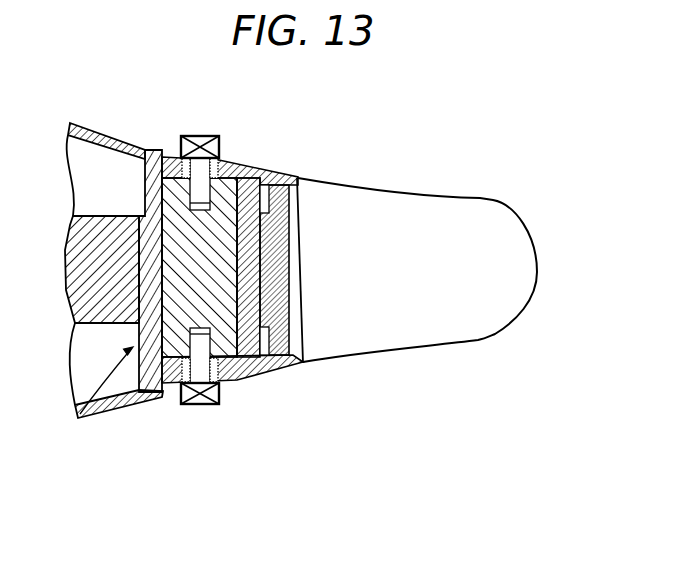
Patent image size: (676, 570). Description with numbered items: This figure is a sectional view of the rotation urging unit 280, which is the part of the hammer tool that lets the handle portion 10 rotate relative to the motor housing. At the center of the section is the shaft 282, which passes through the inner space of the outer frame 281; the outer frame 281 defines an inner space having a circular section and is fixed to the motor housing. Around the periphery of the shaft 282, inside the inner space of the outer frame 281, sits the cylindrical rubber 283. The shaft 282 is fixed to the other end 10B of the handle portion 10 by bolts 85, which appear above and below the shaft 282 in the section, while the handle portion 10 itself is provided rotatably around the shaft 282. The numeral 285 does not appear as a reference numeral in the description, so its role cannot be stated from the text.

The handle portion 10 is at (482, 275).
The other end of the handle portion 10B is at (257, 373).
The rotation urging unit 280 is at (75, 408).
The outer frame 281 is at (298, 326).
The shaft 282 is at (210, 243).
The cylindrical rubber 283 is at (156, 227).
The bolt 285 is at (198, 182).
The bolts 85 is at (200, 367).